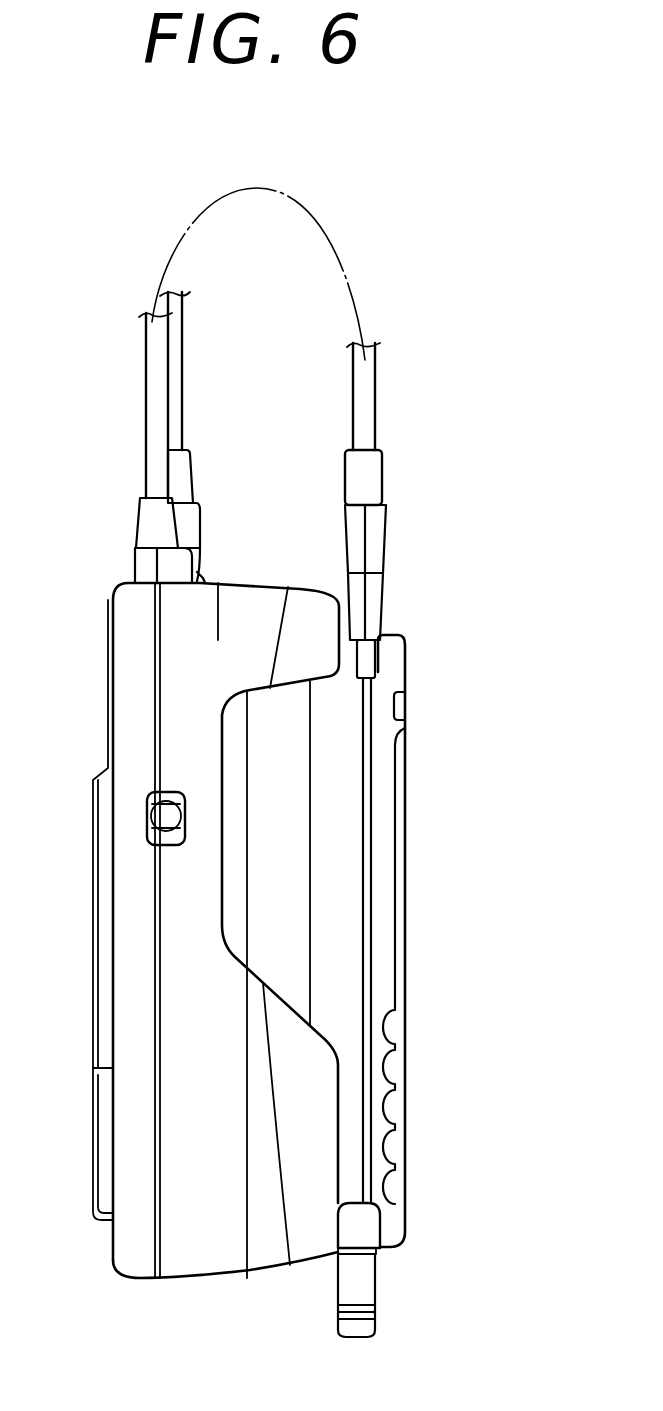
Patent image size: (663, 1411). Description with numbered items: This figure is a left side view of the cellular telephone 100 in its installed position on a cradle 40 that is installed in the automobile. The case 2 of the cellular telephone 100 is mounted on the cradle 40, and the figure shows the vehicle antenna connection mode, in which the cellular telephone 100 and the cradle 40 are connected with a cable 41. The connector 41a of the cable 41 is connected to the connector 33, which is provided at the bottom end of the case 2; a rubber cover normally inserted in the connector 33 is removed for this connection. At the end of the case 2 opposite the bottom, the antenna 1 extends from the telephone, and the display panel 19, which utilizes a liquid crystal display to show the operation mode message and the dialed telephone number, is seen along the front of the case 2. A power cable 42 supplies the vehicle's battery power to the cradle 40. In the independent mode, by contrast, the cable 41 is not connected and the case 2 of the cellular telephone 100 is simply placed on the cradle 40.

The antenna 1 is at (362, 1290).
The case 2 is at (357, 853).
The display panel 19 is at (400, 789).
The connector 33 is at (366, 660).
The cradle 40 is at (262, 620).
The cable 41 is at (150, 341).
The connector of the cable 41a is at (372, 542).
The power cable 42 is at (172, 383).
The cellular telephone 100 is at (449, 941).